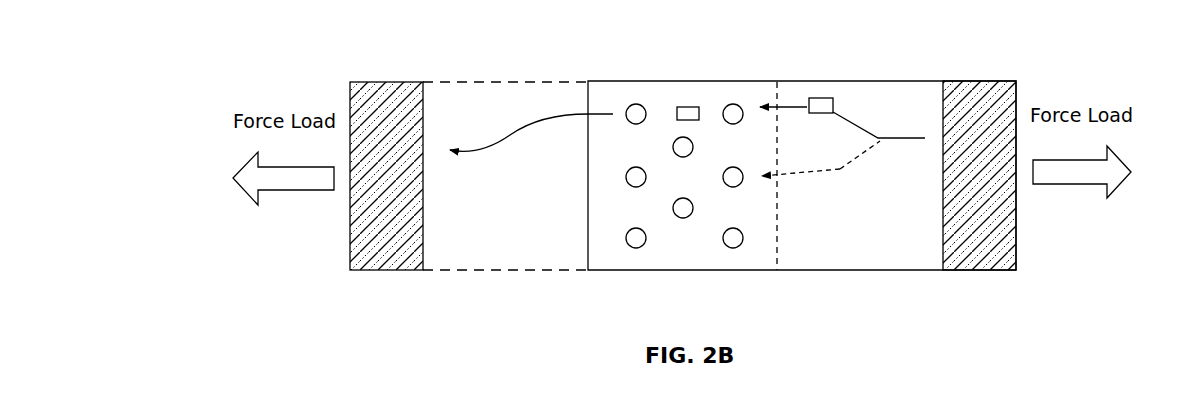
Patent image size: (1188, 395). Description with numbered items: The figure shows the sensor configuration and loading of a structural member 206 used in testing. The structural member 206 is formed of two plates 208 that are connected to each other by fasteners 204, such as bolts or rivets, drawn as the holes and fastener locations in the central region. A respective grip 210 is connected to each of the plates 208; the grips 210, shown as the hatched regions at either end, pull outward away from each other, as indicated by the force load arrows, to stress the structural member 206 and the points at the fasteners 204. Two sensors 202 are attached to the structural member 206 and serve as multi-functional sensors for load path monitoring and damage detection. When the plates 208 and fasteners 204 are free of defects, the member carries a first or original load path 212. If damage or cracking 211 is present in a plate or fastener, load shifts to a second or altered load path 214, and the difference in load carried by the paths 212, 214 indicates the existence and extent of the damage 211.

The sensor 202 is at (688, 107).
The fastener 204 is at (633, 249).
The structural member 206 is at (323, 46).
The plate 208 is at (521, 98).
The grip 210 is at (350, 262).
The damage/cracking 211 is at (733, 124).
The first or original load path 212 is at (852, 123).
The second or altered load path 214 is at (840, 169).